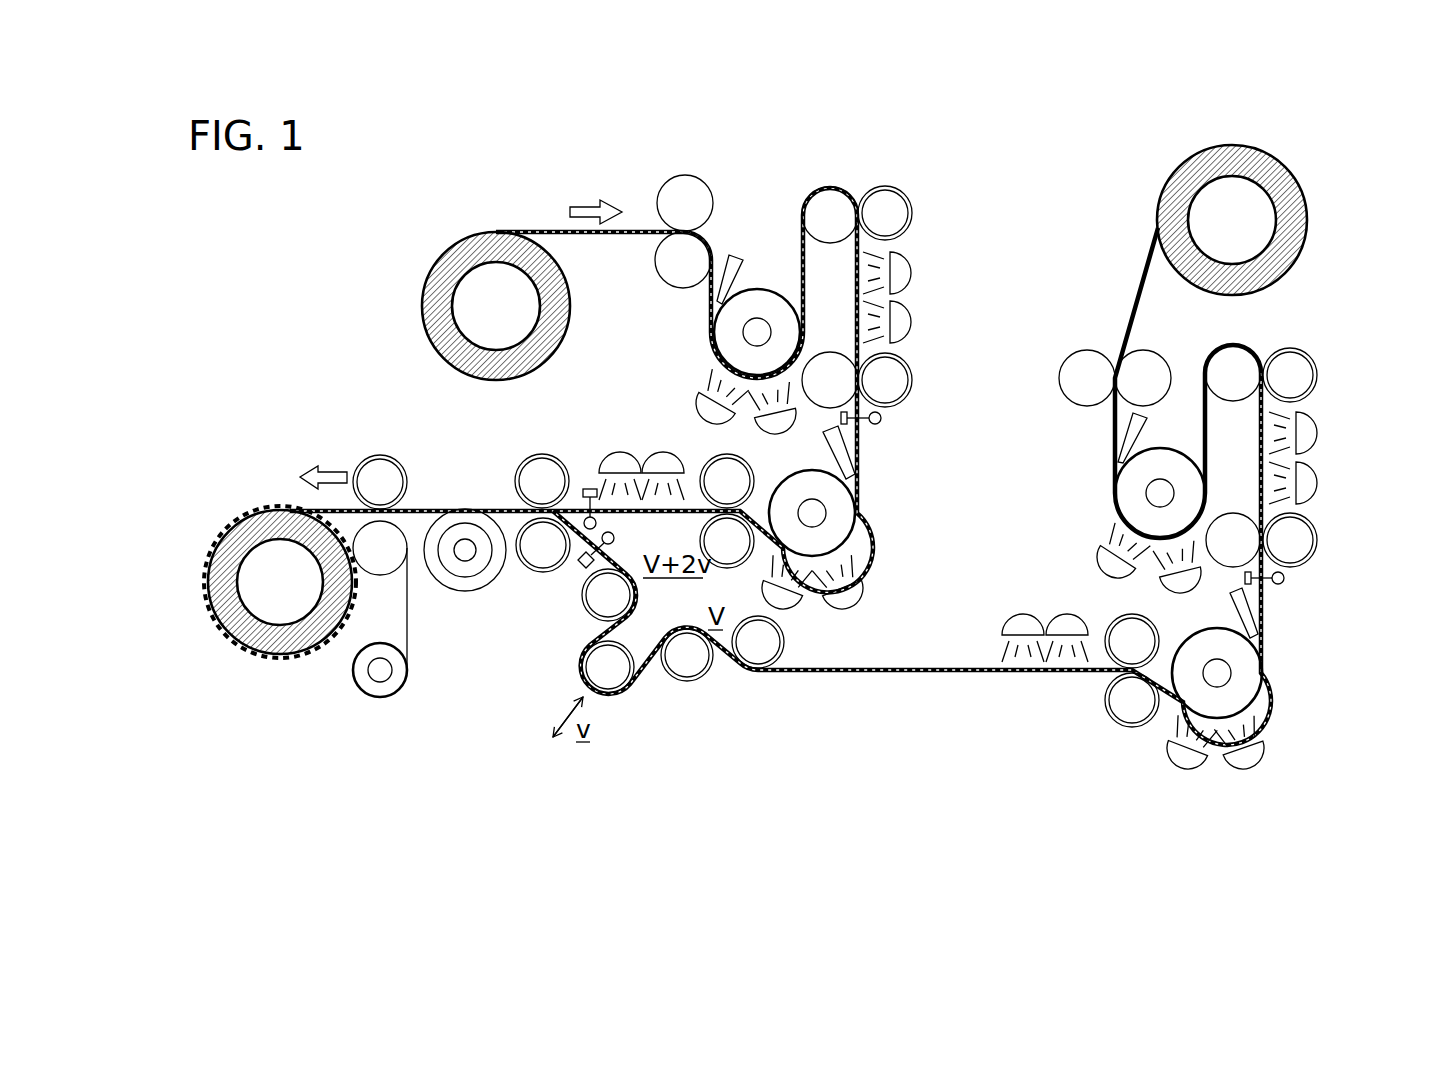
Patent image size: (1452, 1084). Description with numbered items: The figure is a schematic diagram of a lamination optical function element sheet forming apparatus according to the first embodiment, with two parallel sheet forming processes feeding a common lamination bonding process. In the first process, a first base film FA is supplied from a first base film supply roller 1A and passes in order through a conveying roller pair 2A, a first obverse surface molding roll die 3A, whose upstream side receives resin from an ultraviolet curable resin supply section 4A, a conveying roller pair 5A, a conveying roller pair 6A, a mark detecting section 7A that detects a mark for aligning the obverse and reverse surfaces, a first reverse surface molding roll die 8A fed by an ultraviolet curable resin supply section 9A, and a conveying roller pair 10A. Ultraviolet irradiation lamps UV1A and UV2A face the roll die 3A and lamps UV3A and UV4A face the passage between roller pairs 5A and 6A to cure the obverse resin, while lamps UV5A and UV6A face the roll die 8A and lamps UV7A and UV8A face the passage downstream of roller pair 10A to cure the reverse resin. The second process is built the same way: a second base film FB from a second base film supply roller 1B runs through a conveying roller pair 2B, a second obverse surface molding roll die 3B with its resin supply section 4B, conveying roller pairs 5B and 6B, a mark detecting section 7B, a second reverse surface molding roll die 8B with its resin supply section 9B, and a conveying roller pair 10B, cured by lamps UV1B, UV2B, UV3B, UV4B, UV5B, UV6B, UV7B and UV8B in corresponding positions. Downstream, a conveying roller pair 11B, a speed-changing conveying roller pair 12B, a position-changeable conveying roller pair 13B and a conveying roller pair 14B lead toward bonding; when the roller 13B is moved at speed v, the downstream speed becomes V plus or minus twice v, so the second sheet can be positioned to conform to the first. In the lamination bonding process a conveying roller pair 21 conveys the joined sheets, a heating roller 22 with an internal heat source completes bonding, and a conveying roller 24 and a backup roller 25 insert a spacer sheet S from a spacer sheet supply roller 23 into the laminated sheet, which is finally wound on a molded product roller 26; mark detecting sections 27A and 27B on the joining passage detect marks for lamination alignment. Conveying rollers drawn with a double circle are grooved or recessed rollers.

The first base film supply roller 1A is at (473, 292).
The first base film FA is at (541, 230).
The conveying roller pair 2A is at (690, 170).
The first obverse surface molding roll die 3A is at (776, 305).
The ultraviolet curable resin supply section 4A is at (738, 252).
The conveying roller pair 5A is at (870, 182).
The conveying roller pair 6A is at (924, 376).
The mark detecting section 7A is at (884, 433).
The first reverse surface molding roll die 8A is at (782, 490).
The ultraviolet curable resin supply section 9A is at (843, 452).
The conveying roller pair 10A is at (699, 532).
The ultraviolet irradiation lamp UV1A is at (695, 390).
The ultraviolet irradiation lamp UV2A is at (769, 427).
The ultraviolet irradiation lamp UV3A is at (914, 270).
The ultraviolet irradiation lamp UV4A is at (914, 322).
The ultraviolet irradiation lamp UV5A is at (857, 597).
The ultraviolet irradiation lamp UV6A is at (797, 597).
The ultraviolet irradiation lamp UV7A is at (663, 452).
The ultraviolet irradiation lamp UV8A is at (618, 450).
The conveying roller pair 21 is at (542, 452).
The heating roller 22 is at (487, 578).
The spacer sheet supply roller 23 is at (389, 675).
The conveying roller 24 is at (383, 468).
The backup roller 25 is at (380, 567).
The molded product roller 26 is at (276, 604).
The mark detecting section 27A is at (589, 486).
The mark detecting section 27B is at (575, 575).
The spacer sheet S is at (409, 641).
The second base film supply roller 1B is at (1208, 207).
The second base film FB is at (1145, 250).
The conveying roller pair 2B is at (1068, 352).
The second obverse surface molding roll die 3B is at (1177, 462).
The ultraviolet curable resin supply section 4B is at (1137, 432).
The conveying roller pair 5B is at (1288, 342).
The conveying roller pair 6B is at (1323, 528).
The mark detecting section 7B is at (1287, 592).
The second reverse surface molding roll die 8B is at (1210, 648).
The ultraviolet curable resin supply section 9B is at (1246, 612).
The conveying roller pair 10B is at (1129, 733).
The conveying roller pair 11B is at (777, 672).
The conveying roller pair 12B is at (692, 667).
The position-changeable conveying roller pair 13B is at (613, 675).
The conveying roller pair 14B is at (590, 612).
The ultraviolet irradiation lamp UV1B is at (1107, 557).
The ultraviolet irradiation lamp UV2B is at (1170, 590).
The ultraviolet irradiation lamp UV3B is at (1320, 432).
The ultraviolet irradiation lamp UV4B is at (1323, 482).
The ultraviolet irradiation lamp UV5B is at (1257, 757).
The ultraviolet irradiation lamp UV6B is at (1193, 762).
The ultraviolet irradiation lamp UV7B is at (1067, 615).
The ultraviolet irradiation lamp UV8B is at (1008, 620).